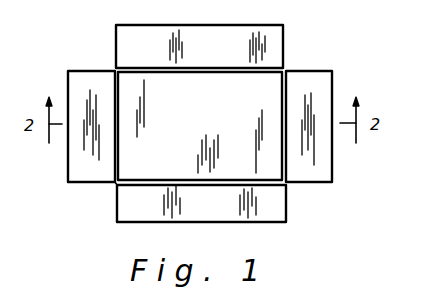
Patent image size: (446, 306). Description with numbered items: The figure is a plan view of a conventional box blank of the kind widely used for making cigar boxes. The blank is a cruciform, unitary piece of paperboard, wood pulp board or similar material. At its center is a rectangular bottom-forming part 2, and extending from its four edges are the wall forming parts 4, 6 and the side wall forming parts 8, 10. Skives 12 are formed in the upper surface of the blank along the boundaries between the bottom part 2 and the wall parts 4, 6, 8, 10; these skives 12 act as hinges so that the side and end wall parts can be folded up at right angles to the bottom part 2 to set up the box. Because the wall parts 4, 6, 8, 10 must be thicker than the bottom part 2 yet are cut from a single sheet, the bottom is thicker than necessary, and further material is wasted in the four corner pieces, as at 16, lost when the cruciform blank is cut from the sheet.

The bottom-forming part 2 is at (200, 128).
The end wall forming part 4 is at (78, 165).
The end wall forming part 6 is at (330, 163).
The side wall forming part 8 is at (272, 44).
The side wall forming part 10 is at (278, 203).
The skives 12 is at (282, 94).
The corner pieces 16 is at (103, 200).